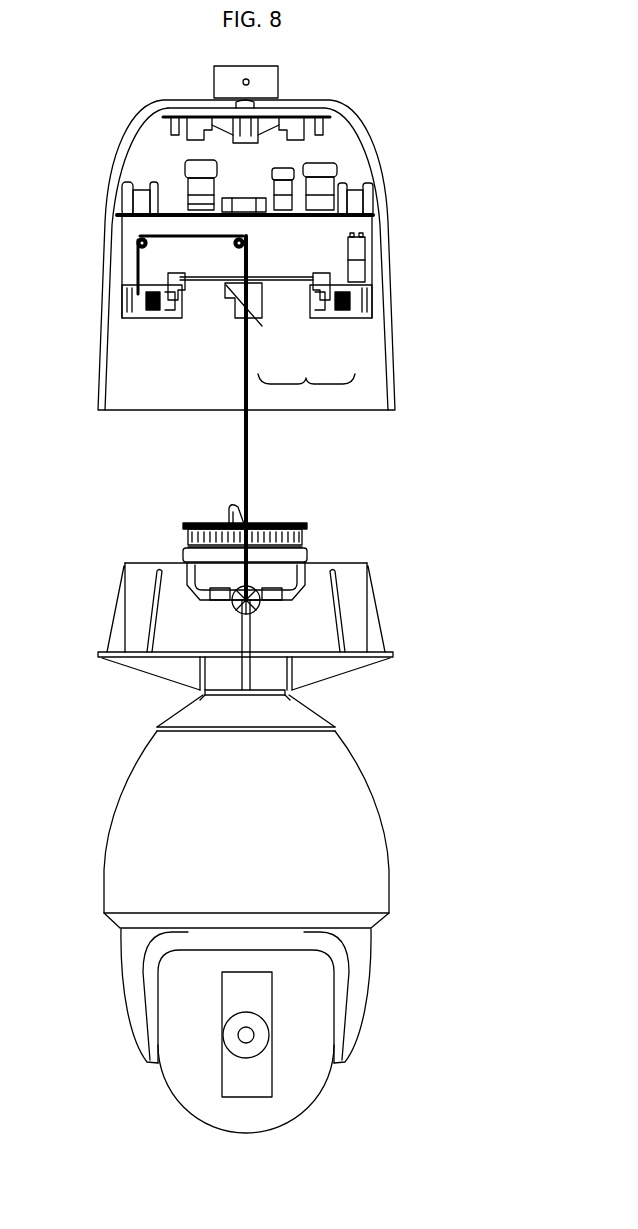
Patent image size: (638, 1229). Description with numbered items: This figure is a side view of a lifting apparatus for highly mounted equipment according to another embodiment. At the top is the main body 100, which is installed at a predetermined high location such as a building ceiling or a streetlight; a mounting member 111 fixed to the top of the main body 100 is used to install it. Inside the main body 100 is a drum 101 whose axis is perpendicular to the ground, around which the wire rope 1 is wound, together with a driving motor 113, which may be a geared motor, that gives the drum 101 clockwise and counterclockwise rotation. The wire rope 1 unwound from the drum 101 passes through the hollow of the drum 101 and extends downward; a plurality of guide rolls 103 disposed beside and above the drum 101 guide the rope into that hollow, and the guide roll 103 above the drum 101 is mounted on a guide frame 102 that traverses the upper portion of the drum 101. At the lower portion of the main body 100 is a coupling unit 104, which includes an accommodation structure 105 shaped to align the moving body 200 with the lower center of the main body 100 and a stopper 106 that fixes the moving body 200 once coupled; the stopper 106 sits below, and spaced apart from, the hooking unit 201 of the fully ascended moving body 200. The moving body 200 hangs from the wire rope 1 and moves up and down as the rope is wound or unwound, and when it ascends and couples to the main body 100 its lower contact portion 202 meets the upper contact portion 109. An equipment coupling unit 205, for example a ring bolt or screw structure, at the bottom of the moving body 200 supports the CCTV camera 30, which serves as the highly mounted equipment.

The wire rope 1 is at (250, 442).
The CCTV camera 30 is at (396, 806).
The main body 100 is at (405, 157).
The drum 101 is at (126, 291).
The guide frame 102 is at (182, 228).
The guide rolls 103 is at (244, 241).
The coupling unit 104 is at (306, 393).
The accommodation structure 105 is at (310, 310).
The stopper 106 is at (303, 298).
The upper contact portion 109 is at (207, 293).
The mounting member 111 is at (281, 78).
The driving motor 113 is at (358, 251).
The moving body 200 is at (405, 562).
The hooking unit 201 is at (320, 527).
The lower contact portion 202 is at (280, 518).
The equipment coupling unit 205 is at (296, 673).